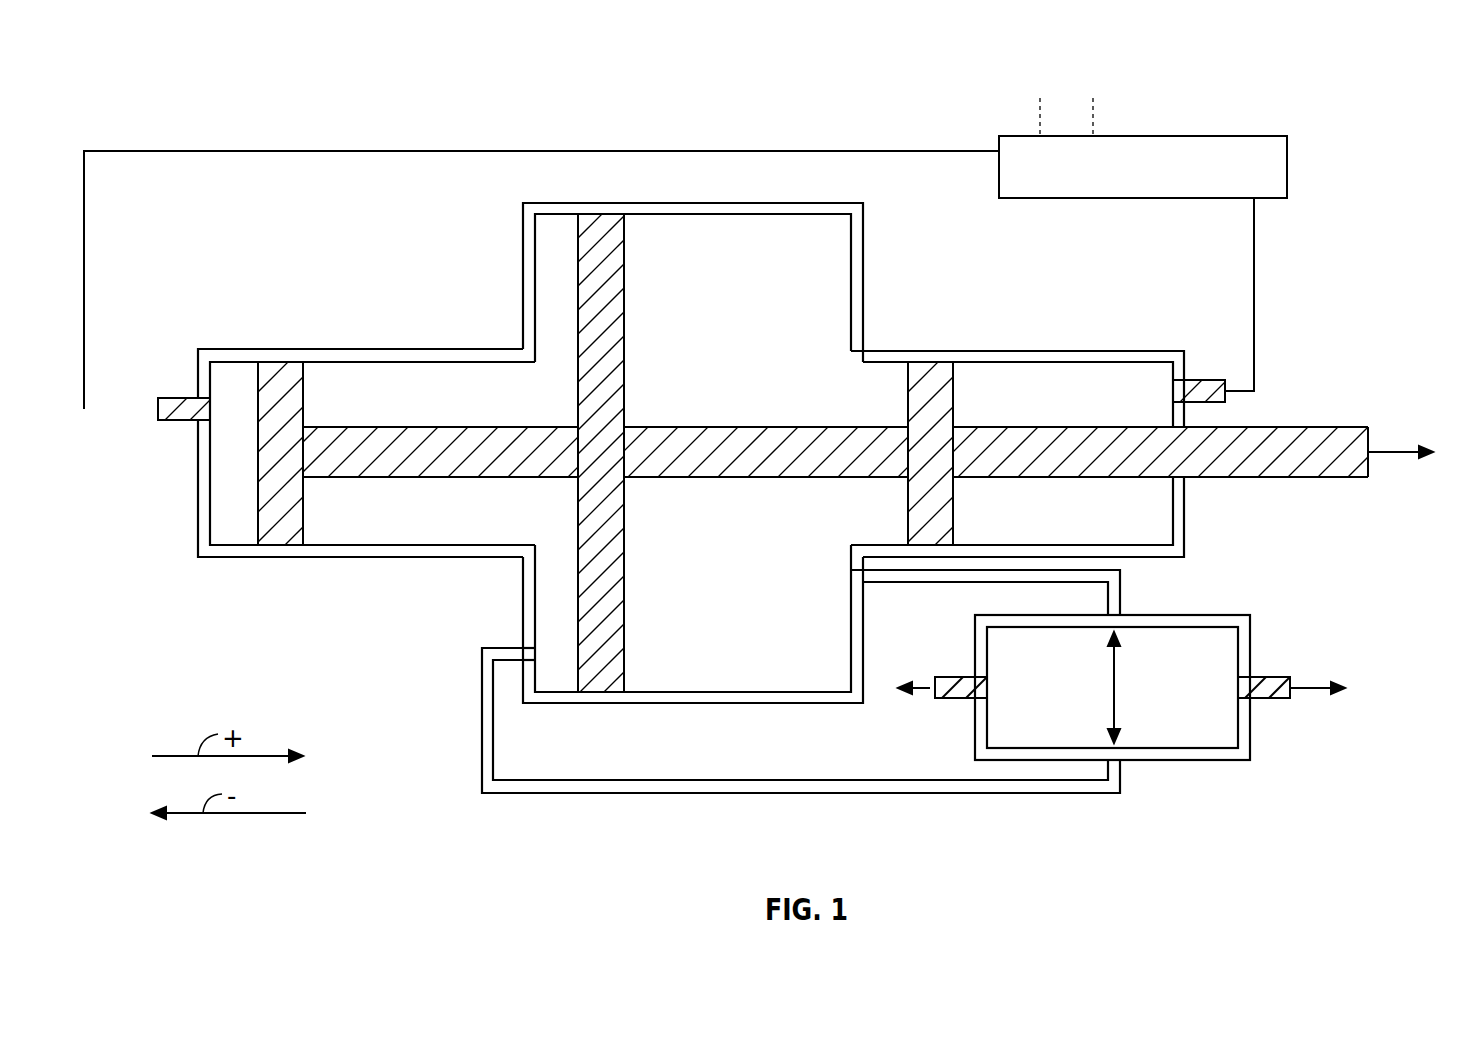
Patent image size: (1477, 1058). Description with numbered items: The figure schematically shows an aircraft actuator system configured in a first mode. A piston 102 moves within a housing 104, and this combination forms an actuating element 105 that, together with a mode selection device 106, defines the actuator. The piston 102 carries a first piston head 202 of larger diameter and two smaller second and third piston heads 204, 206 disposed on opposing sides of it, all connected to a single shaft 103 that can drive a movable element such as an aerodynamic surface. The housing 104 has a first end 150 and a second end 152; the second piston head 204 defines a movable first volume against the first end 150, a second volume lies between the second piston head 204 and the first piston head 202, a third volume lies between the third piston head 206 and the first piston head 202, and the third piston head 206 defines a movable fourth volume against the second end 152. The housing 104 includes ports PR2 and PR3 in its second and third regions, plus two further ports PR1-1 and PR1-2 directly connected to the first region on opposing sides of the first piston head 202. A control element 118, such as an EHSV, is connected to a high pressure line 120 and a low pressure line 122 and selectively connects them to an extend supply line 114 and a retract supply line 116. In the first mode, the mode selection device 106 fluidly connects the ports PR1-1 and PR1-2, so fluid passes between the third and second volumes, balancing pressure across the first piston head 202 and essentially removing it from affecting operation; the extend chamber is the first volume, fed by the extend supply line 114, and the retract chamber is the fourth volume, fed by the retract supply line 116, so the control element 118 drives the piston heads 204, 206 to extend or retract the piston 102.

The piston 102 is at (453, 425).
The shaft 103 is at (1300, 477).
The housing 104 is at (863, 255).
The actuating element 105 is at (277, 294).
The mode selection device 106 is at (1180, 762).
The extend supply line 114 is at (727, 150).
The retract supply line 116 is at (1254, 283).
The control element 118 is at (1287, 167).
The high pressure line 120 is at (1040, 115).
The low pressure line 122 is at (1093, 118).
The first end 150 is at (198, 465).
The second end 152 is at (1184, 505).
The first piston head 202 is at (624, 285).
The second piston head 204 is at (303, 382).
The third piston head 206 is at (908, 400).
The port PR1-1 is at (527, 655).
The port PR1-2 is at (855, 580).
The port PR2 is at (178, 396).
The port PR3 is at (1205, 380).